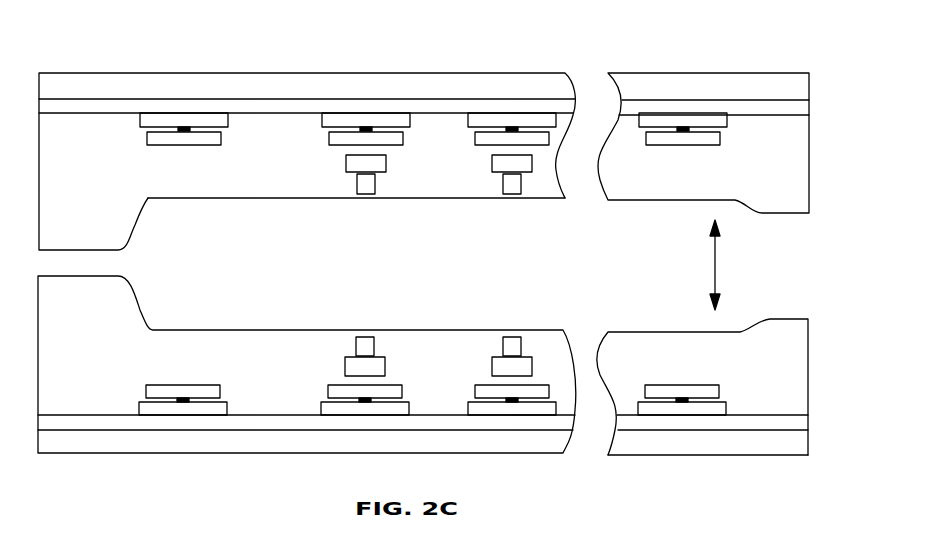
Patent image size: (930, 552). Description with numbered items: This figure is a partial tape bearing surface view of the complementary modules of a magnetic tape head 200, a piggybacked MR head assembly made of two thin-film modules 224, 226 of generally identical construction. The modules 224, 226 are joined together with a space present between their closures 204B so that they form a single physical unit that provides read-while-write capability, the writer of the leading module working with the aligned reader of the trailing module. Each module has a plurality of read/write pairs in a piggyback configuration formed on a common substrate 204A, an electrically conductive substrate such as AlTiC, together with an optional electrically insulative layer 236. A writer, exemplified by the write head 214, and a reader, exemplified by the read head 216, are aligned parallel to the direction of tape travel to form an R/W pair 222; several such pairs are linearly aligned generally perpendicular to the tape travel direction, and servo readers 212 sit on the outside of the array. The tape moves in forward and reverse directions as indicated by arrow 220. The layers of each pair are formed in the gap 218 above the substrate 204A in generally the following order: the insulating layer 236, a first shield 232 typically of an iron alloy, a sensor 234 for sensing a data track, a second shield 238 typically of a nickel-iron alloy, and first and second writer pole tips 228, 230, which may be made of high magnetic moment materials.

The magnetic tape head 200 is at (358, 60).
The common substrate 204A is at (165, 95).
The closures 204B is at (141, 230).
The servo readers 212 is at (222, 378).
The write head 214 is at (437, 366).
The read head 216 is at (452, 406).
The gap 218 is at (229, 199).
The arrow 220 is at (716, 270).
The R/W pair 222 is at (375, 310).
The thin-film module 224 is at (736, 73).
The thin-film module 226 is at (722, 457).
The first writer pole tip 228 is at (345, 366).
The second writer pole tip 230 is at (354, 343).
The first shield 232 is at (320, 410).
The sensor 234 is at (320, 395).
The electrically insulative layer 236 is at (800, 412).
The second shield 238 is at (318, 390).